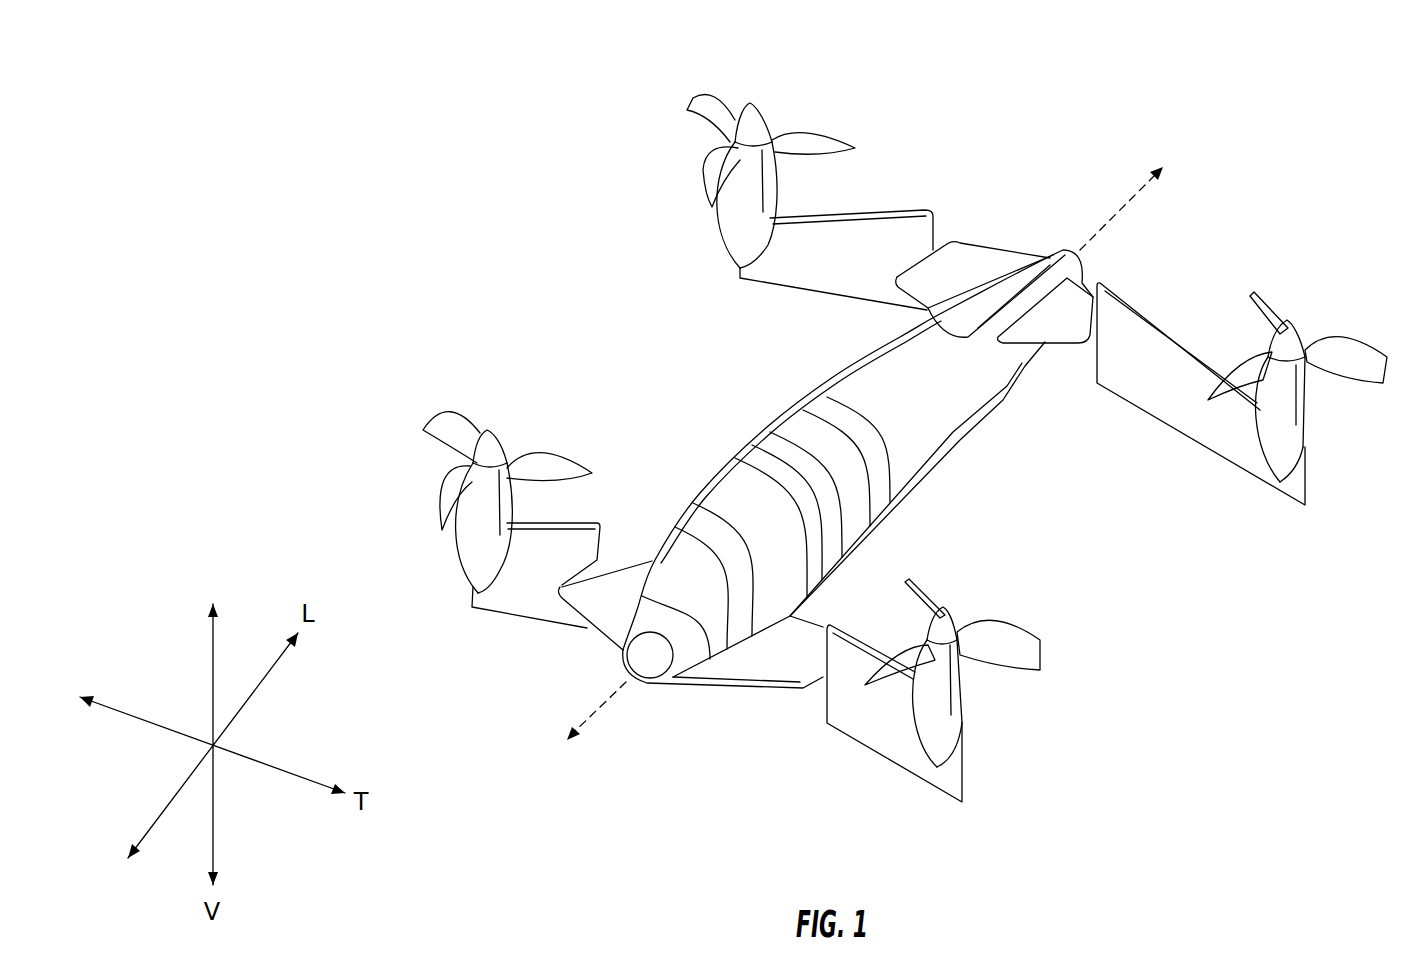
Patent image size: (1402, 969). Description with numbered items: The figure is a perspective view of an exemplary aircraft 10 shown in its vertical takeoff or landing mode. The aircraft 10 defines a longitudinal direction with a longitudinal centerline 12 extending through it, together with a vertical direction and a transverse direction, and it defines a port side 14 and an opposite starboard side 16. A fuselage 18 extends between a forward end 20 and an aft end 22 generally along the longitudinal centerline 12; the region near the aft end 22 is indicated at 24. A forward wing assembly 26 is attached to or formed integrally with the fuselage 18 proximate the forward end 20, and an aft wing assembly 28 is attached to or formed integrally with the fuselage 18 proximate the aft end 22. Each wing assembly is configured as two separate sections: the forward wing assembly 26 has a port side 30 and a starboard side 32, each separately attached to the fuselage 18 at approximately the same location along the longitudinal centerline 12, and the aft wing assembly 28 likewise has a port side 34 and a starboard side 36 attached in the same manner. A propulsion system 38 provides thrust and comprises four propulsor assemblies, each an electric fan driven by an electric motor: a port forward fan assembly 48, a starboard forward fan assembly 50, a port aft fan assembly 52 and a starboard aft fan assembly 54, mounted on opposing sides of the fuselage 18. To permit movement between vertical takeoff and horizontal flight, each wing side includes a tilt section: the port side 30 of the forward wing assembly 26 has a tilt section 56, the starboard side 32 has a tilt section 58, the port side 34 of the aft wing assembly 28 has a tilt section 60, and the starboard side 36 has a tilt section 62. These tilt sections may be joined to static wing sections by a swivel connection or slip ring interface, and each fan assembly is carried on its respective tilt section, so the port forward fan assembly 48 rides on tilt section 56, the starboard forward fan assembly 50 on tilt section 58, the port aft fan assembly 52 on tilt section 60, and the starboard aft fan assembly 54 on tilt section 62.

The aircraft 10 is at (1217, 113).
The longitudinal centerline 12 is at (1147, 173).
The port side 14 is at (1153, 598).
The starboard side 16 is at (599, 318).
The fuselage 18 is at (795, 428).
The forward end 20 is at (633, 730).
The aft end 22 is at (1060, 226).
The aft end of fuselage 24 is at (1108, 220).
The forward wing assembly 26 is at (985, 842).
The aft wing assembly 28 is at (658, 96).
The port side of forward wing assembly 30 is at (795, 771).
The starboard side of forward wing assembly 32 is at (513, 665).
The port side of aft wing assembly 34 is at (1230, 284).
The starboard side of aft wing assembly 36 is at (785, 97).
The propulsion system 38 is at (439, 327).
The port forward fan assembly 48 is at (953, 694).
The starboard forward fan assembly 50 is at (488, 487).
The port aft fan assembly 52 is at (1297, 398).
The starboard aft fan assembly 54 is at (768, 178).
The tilt section 56 is at (916, 757).
The tilt section 58 is at (497, 597).
The tilt section 60 is at (1224, 443).
The tilt section 62 is at (777, 268).